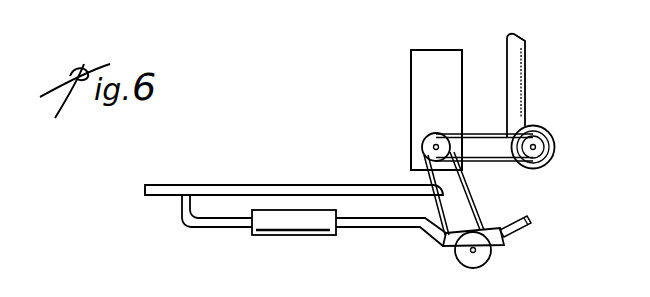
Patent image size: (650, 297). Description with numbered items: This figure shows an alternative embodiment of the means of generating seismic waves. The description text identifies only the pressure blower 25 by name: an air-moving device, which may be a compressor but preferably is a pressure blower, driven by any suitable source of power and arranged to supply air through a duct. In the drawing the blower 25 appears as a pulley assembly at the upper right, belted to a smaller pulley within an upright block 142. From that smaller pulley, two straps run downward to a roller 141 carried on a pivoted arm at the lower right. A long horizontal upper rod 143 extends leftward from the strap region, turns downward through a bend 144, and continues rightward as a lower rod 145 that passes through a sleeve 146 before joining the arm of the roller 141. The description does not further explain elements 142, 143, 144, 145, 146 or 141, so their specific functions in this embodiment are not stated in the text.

The support block 142 is at (411, 82).
The pressure blower 25 is at (554, 143).
The upper rod 143 is at (330, 185).
The bend of rod 144 is at (178, 200).
The lower rod 145 is at (212, 227).
The sleeve coupling 146 is at (300, 231).
The roller 141 is at (490, 262).